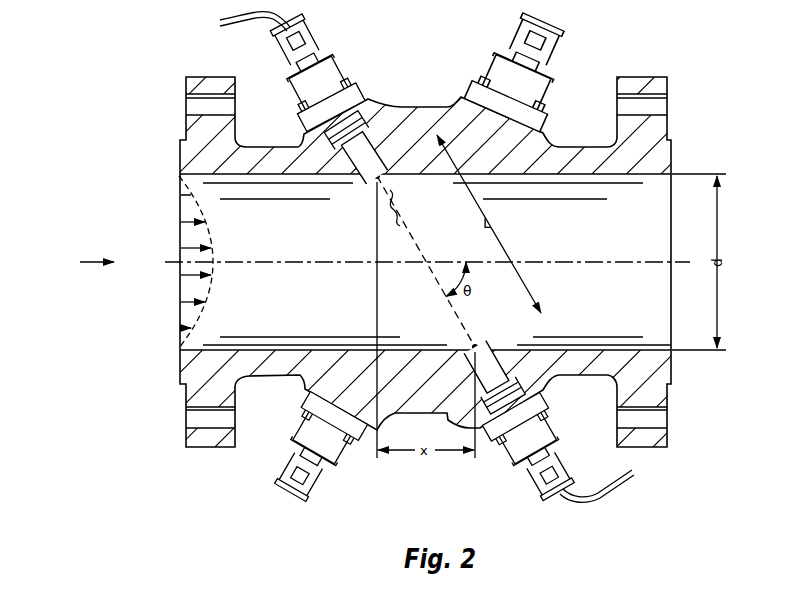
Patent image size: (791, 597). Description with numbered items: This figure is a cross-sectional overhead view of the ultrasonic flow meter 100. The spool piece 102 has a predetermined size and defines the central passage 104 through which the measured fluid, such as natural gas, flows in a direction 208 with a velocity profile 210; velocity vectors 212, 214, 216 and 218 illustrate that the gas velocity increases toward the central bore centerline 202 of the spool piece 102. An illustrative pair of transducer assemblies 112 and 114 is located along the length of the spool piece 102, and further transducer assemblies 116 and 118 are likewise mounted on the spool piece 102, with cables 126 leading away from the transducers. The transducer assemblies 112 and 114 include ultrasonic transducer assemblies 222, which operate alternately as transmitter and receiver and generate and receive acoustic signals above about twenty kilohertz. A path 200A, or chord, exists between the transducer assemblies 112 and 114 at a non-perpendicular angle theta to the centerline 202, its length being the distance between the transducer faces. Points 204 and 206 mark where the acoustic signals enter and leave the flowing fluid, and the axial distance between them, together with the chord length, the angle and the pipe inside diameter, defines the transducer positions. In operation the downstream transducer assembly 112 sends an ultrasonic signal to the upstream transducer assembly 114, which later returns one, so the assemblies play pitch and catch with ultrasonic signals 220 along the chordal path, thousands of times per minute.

The ultrasonic flow meter 100 is at (116, 70).
The spool piece 102 is at (430, 106).
The central passage 104 is at (580, 239).
The transducer assembly 112 is at (541, 490).
The transducer assembly 114 is at (340, 70).
The ultrasonic transducer 116 is at (318, 486).
The ultrasonic transducer 118 is at (540, 42).
The transducer cable 126 is at (229, 27).
The path 200A is at (426, 261).
The central bore centerline 202 is at (586, 266).
The point 204 is at (478, 344).
The point 206 is at (374, 179).
The direction 208 is at (96, 259).
The velocity profile 210 is at (213, 234).
The velocity vector 212 is at (177, 220).
The velocity vector 214 is at (177, 247).
The velocity vector 216 is at (177, 276).
The velocity vector 218 is at (177, 303).
The ultrasonic signals 220 is at (400, 199).
The ultrasonic transducer assemblies 222 is at (358, 154).